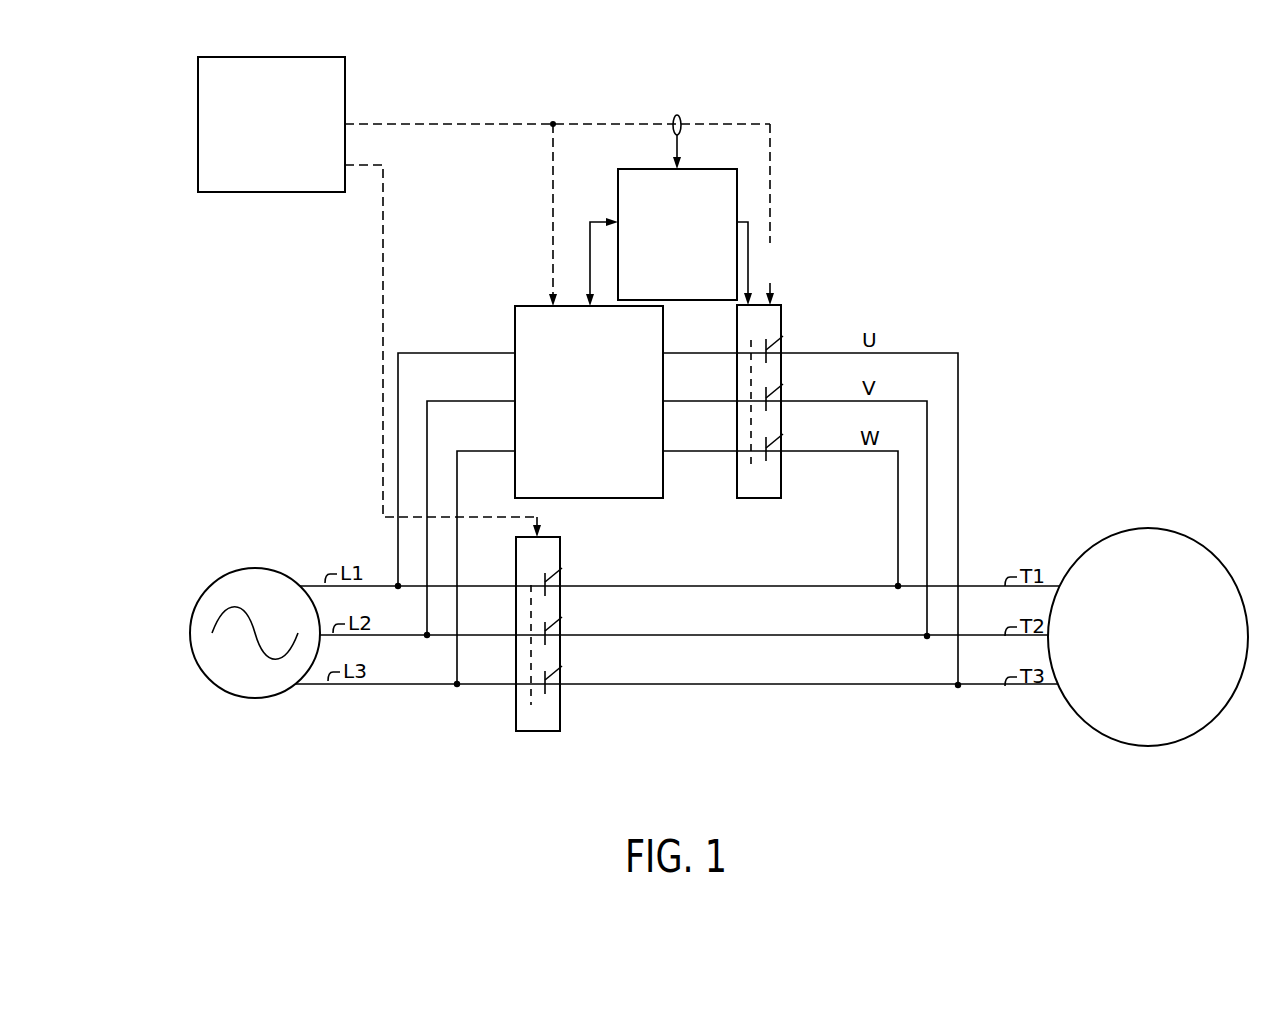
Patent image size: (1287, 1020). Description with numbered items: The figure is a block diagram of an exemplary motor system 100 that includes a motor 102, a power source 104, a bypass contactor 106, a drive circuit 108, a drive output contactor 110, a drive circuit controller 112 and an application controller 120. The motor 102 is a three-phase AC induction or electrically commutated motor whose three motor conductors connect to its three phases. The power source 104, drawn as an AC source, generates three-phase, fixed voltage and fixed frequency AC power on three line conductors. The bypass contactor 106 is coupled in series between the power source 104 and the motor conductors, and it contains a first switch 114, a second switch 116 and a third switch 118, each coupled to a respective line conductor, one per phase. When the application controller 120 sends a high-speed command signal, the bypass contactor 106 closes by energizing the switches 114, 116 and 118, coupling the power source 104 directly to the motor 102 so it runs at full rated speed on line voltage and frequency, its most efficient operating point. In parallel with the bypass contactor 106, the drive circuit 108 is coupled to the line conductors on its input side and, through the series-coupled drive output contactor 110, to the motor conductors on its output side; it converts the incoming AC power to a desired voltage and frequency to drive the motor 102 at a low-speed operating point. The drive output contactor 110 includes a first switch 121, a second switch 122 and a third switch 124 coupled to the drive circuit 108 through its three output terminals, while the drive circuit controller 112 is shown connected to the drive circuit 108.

The motor system 100 is at (939, 143).
The motor 102 is at (1166, 681).
The power source 104 is at (249, 561).
The bypass contactor 106 is at (549, 732).
The drive circuit 108 is at (607, 445).
The drive output contactor 110 is at (772, 499).
The drive circuit controller 112 is at (696, 292).
The first switch 114 is at (562, 568).
The second switch 116 is at (562, 617).
The third switch 118 is at (562, 666).
The application controller 120 is at (242, 152).
The first switch 121 is at (783, 336).
The second switch 122 is at (783, 384).
The third switch 124 is at (783, 434).